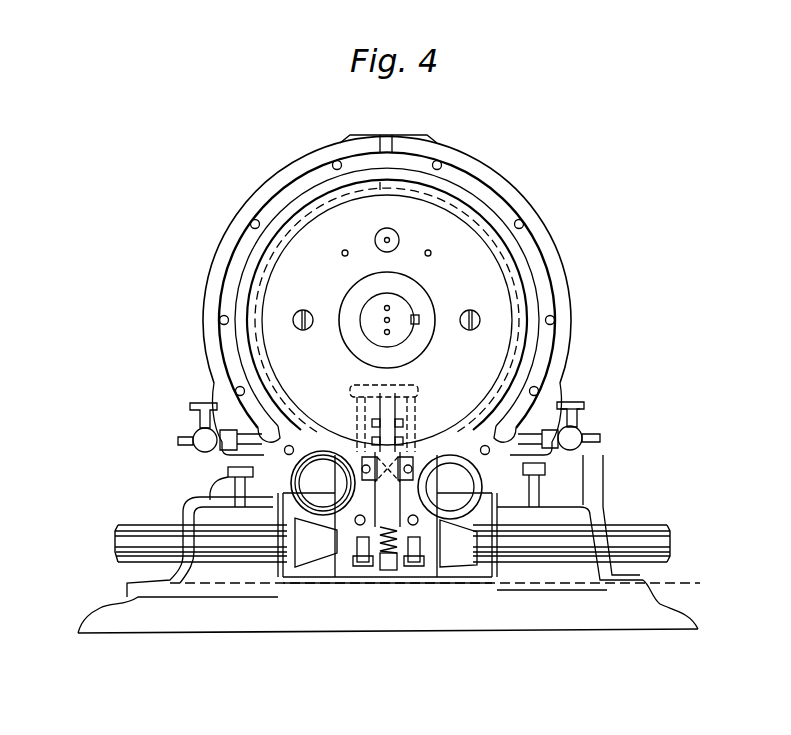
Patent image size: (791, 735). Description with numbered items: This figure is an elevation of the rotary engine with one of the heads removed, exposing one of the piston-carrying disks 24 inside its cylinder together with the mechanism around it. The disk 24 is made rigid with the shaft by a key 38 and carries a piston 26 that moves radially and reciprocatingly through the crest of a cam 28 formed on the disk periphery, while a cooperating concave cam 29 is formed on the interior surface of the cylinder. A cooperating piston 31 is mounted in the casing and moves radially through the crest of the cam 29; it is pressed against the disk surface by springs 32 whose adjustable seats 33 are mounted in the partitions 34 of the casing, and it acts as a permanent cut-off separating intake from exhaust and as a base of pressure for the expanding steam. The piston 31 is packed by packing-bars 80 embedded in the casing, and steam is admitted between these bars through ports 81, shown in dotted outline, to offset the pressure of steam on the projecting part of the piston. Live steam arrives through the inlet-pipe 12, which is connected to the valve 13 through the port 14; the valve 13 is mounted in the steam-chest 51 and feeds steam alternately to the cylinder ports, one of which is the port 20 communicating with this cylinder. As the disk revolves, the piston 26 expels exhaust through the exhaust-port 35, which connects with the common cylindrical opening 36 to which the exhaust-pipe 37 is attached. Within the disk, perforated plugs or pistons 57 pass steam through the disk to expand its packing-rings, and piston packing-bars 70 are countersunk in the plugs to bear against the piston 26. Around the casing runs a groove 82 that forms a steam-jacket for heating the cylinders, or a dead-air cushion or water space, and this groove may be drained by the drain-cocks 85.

The inlet-pipe 12 is at (122, 548).
The valve 13 is at (343, 560).
The port 14 is at (313, 562).
The port 20 is at (270, 463).
The piston-carrying disk 24 is at (493, 303).
The piston 26 is at (403, 417).
The cam 28 is at (498, 437).
The concave cam 29 is at (582, 413).
The piston 31 is at (440, 555).
The springs 32 is at (411, 562).
The adjustable seats 33 is at (383, 565).
The partitions 34 is at (366, 566).
The exhaust-port 35 is at (512, 456).
The cylindrical opening 36 is at (465, 482).
The exhaust-pipe 37 is at (655, 536).
The key 38 is at (418, 319).
The steam-chest 51 is at (232, 472).
The pistons (perforated plugs) 57 is at (399, 239).
The piston packing-bars 70 is at (373, 428).
The packing-bars 80 is at (433, 482).
The ports 81 is at (340, 500).
The groove 82 is at (546, 273).
The drain-cocks 85 is at (206, 437).